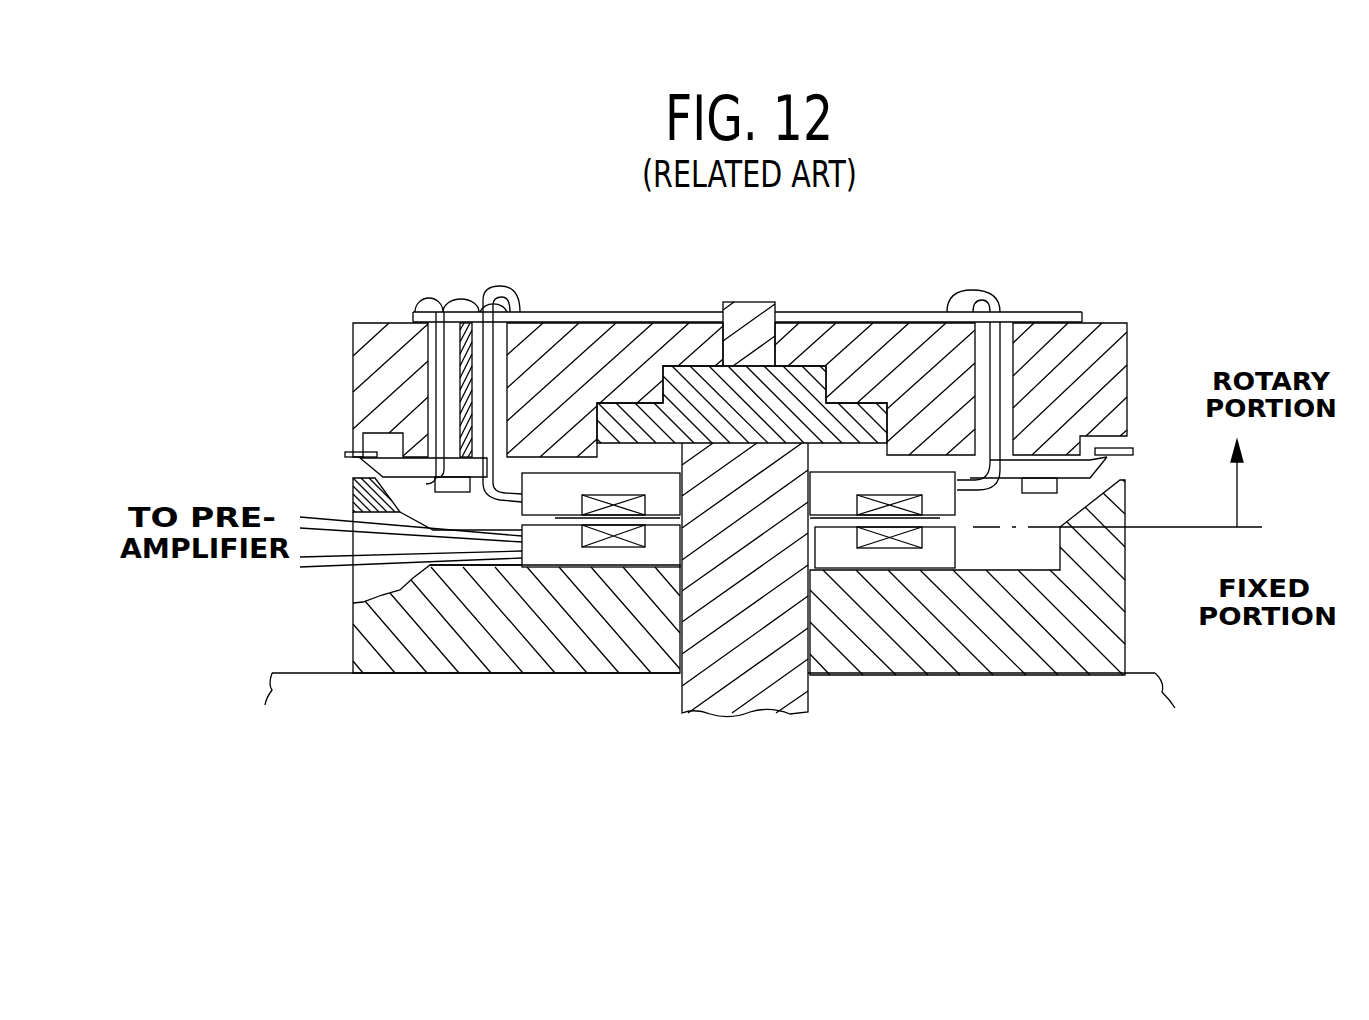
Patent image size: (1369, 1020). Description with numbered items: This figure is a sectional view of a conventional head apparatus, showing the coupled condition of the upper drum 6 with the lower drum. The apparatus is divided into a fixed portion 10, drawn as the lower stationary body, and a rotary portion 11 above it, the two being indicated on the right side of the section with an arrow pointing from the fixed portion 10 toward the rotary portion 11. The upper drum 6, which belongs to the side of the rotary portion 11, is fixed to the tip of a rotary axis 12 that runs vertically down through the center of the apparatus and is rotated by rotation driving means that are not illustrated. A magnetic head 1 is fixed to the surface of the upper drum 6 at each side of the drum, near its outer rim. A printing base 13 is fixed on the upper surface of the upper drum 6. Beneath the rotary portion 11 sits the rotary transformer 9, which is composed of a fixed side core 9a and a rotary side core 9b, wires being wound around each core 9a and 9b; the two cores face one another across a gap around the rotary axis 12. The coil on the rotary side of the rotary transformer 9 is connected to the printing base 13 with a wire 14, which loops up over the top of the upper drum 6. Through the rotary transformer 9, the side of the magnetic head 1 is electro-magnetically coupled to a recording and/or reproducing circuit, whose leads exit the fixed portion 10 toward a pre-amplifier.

The magnetic head 1 is at (377, 466).
The upper drum 6 is at (1103, 352).
The rotary transformer 9 is at (716, 649).
The fixed side core 9a is at (547, 502).
The rotary side core 9b is at (537, 553).
The fixed portion 10 is at (727, 593).
The rotary portion 11 is at (1117, 442).
The rotary axis 12 is at (753, 688).
The printing base 13 is at (800, 310).
The wire 14 is at (1005, 310).